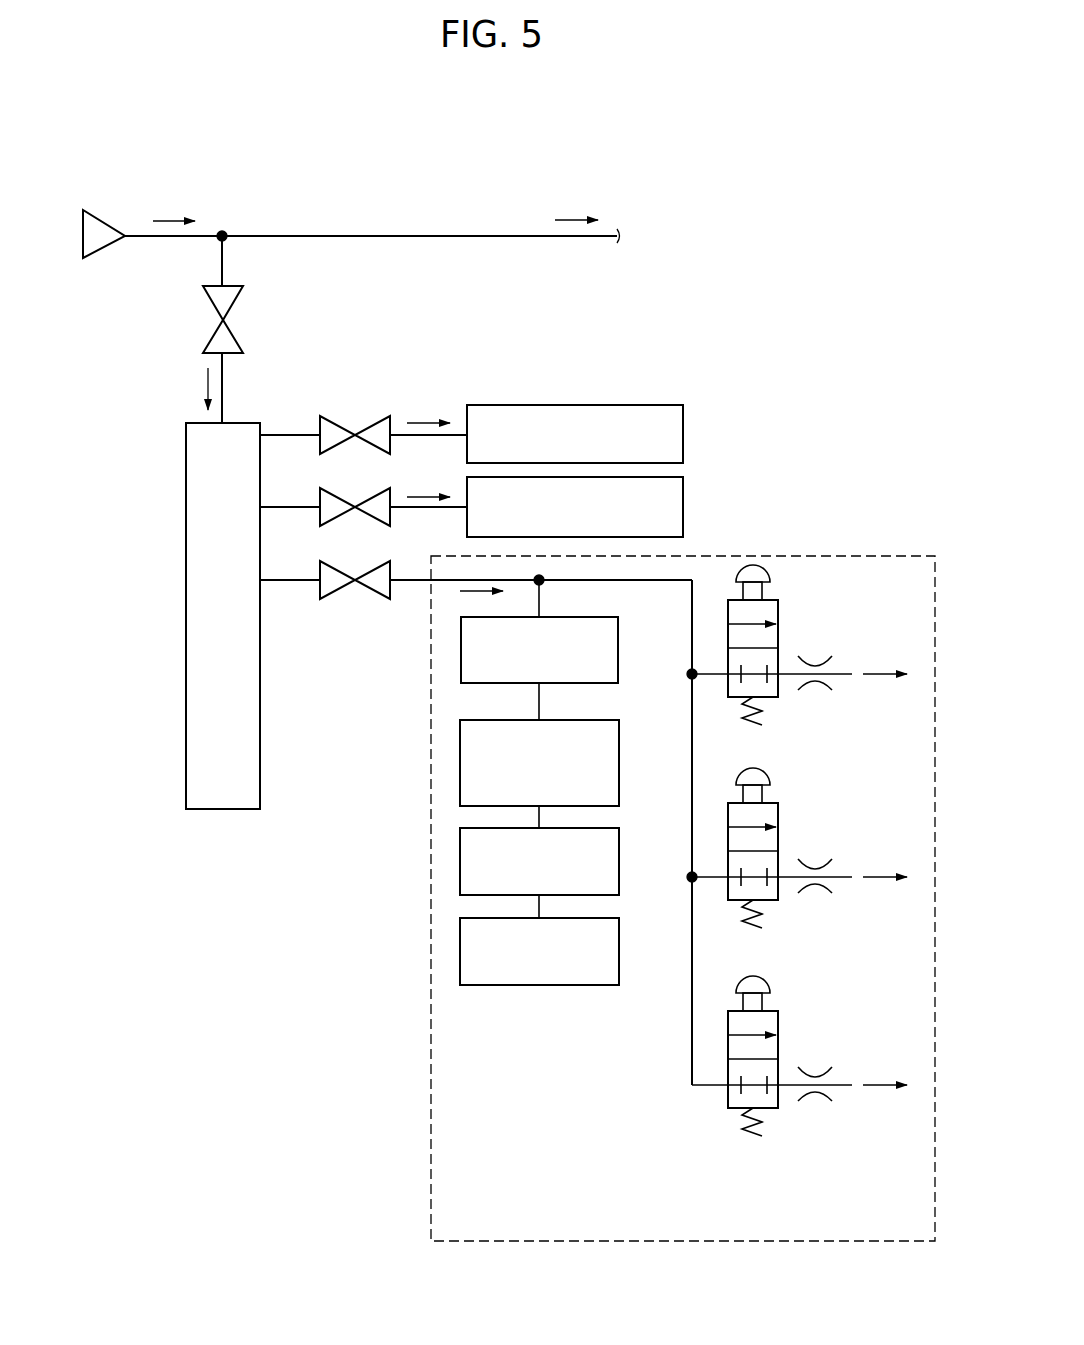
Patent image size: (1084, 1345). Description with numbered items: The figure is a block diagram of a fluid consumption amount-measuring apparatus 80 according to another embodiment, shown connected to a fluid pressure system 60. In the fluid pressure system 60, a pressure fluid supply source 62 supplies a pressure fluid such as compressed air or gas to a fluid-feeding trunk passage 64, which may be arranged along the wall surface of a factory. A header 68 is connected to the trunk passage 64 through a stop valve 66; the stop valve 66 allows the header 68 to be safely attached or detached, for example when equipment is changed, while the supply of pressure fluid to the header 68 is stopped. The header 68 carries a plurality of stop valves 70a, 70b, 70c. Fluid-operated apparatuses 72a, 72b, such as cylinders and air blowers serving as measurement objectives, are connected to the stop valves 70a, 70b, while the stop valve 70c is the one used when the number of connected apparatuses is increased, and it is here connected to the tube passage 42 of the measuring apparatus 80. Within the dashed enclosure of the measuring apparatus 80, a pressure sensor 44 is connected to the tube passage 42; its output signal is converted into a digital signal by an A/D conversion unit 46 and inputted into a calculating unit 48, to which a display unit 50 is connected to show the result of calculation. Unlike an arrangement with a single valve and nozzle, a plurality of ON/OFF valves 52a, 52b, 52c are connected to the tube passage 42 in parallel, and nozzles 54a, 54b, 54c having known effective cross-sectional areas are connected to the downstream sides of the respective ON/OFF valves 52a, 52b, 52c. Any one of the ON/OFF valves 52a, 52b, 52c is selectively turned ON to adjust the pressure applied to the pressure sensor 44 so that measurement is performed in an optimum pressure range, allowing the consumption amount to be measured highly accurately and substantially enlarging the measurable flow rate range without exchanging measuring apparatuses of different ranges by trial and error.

The tube passage 42 is at (657, 581).
The pressure sensor 44 is at (620, 642).
The A/D conversion unit 46 is at (620, 745).
The calculating unit 48 is at (620, 855).
The display unit 50 is at (620, 945).
The ON/OFF valve 52a is at (779, 610).
The ON/OFF valve 52b is at (779, 813).
The ON/OFF valve 52c is at (779, 1021).
The nozzle 54a is at (815, 693).
The nozzle 54b is at (815, 896).
The nozzle 54c is at (815, 1104).
The fluid pressure system 60 is at (470, 203).
The pressure fluid supply source 62 is at (107, 225).
The fluid-feeding trunk passage 64 is at (337, 234).
The stop valve 66 is at (242, 298).
The header 68 is at (217, 809).
The stop valve 70a is at (350, 418).
The stop valve 70b is at (350, 490).
The stop valve 70c is at (350, 564).
The fluid-operated apparatus 72a is at (684, 430).
The fluid-operated apparatus 72b is at (684, 503).
The fluid consumption amount-measuring apparatus 80 is at (824, 531).